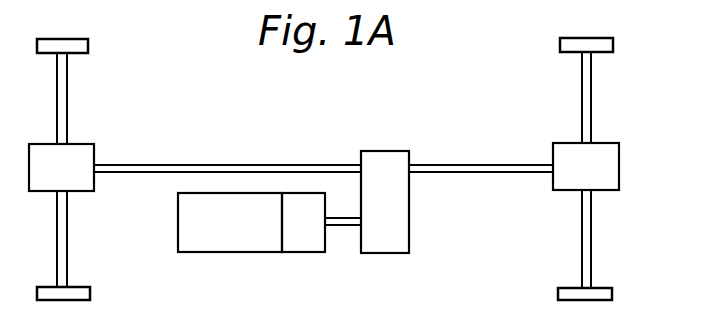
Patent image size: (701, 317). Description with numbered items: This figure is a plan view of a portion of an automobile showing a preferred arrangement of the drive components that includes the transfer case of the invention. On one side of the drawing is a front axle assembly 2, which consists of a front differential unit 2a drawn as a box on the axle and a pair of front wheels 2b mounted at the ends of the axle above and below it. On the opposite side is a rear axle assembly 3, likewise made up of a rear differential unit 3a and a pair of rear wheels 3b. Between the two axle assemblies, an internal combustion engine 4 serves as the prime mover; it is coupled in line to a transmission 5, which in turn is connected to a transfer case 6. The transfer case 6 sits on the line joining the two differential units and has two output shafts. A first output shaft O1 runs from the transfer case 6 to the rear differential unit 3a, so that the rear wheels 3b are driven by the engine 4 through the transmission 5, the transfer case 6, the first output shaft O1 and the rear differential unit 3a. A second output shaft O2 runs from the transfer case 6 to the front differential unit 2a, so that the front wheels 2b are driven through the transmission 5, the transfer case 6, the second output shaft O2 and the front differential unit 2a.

The front axle assembly 2 is at (72, 134).
The front differential unit 2a is at (29, 176).
The front wheels 2b is at (88, 45).
The rear axle assembly 3 is at (573, 137).
The rear differential unit 3a is at (619, 163).
The rear wheels 3b is at (613, 44).
The internal combustion engine 4 is at (228, 233).
The transmission 5 is at (306, 233).
The transfer case 6 is at (392, 233).
The second output shaft O2 is at (227, 164).
The first output shaft O1 is at (478, 164).